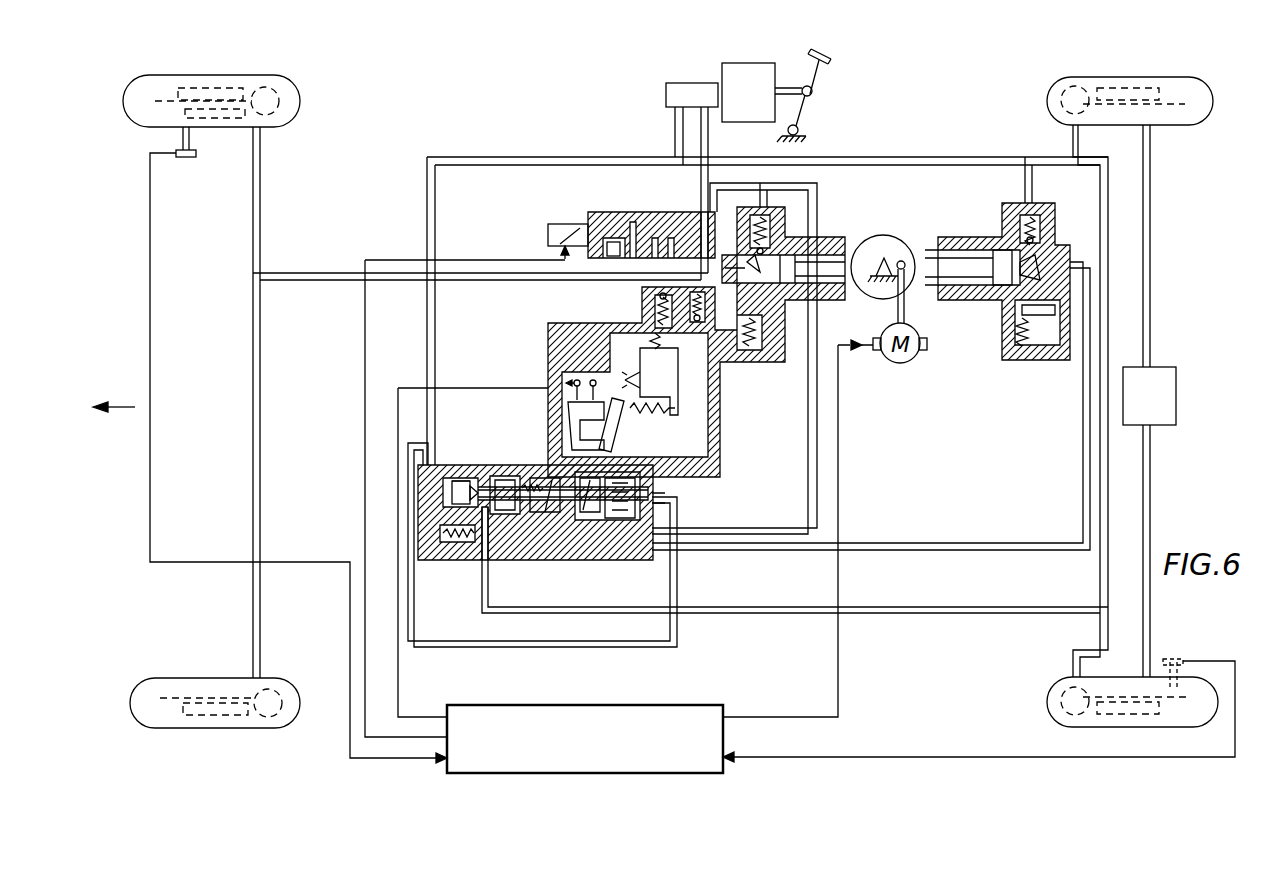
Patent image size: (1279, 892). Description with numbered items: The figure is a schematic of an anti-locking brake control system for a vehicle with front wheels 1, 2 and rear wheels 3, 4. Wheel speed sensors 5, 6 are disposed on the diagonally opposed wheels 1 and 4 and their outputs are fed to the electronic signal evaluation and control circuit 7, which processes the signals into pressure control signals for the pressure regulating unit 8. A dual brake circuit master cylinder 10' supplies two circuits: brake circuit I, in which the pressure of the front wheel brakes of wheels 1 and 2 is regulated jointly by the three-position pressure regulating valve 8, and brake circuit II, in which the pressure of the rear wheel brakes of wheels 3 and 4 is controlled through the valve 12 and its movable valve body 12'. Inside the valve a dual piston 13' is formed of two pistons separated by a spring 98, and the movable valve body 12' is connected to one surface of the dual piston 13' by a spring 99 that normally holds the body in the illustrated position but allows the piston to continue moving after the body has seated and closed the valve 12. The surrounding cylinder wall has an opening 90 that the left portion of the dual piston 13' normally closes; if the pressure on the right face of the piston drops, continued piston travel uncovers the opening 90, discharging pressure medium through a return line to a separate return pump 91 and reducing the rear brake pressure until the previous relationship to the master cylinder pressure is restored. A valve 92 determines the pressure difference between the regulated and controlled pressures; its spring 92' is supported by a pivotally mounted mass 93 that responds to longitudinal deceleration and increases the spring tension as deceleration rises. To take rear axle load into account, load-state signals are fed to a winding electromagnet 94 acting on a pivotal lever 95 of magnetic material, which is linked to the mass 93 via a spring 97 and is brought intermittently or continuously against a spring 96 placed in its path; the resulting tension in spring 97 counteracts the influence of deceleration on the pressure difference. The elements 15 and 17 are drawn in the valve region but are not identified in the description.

The front wheel 1 is at (290, 88).
The front wheel 2 is at (163, 678).
The rear wheel 3 is at (1060, 80).
The rear wheel 4 is at (1055, 685).
The wheel speed sensor 5 is at (190, 158).
The wheel speed sensor 6 is at (1178, 660).
The electronic evaluation and control circuit 7 is at (730, 705).
The pressure regulating unit 8 is at (599, 212).
The dual brake circuit master cylinder 10' is at (748, 80).
The brake circuit I is at (713, 135).
The brake circuit II is at (675, 127).
The valve 12 is at (490, 512).
The movable valve body 12' is at (399, 482).
The dual piston 13' is at (537, 541).
The valve element 15 is at (568, 505).
The outlet passage 17 is at (660, 490).
The opening 90 is at (620, 545).
The return pump 91 is at (990, 338).
The valve 92 is at (715, 281).
The spring 92' is at (616, 309).
The mass 93 is at (667, 373).
The electromagnet 94 is at (572, 410).
The pivotal lever 95 is at (622, 430).
The spring 96 is at (570, 378).
The spring 97 is at (660, 413).
The spring 98 is at (520, 490).
The spring 99 is at (462, 480).